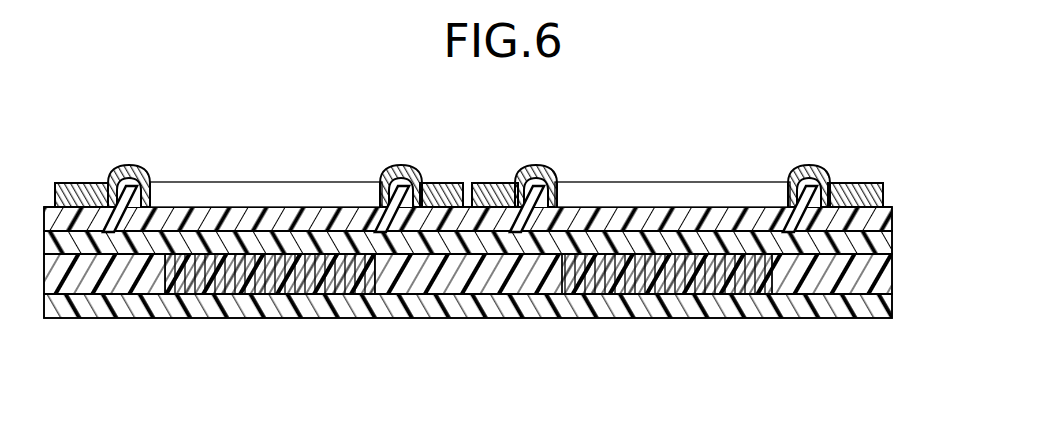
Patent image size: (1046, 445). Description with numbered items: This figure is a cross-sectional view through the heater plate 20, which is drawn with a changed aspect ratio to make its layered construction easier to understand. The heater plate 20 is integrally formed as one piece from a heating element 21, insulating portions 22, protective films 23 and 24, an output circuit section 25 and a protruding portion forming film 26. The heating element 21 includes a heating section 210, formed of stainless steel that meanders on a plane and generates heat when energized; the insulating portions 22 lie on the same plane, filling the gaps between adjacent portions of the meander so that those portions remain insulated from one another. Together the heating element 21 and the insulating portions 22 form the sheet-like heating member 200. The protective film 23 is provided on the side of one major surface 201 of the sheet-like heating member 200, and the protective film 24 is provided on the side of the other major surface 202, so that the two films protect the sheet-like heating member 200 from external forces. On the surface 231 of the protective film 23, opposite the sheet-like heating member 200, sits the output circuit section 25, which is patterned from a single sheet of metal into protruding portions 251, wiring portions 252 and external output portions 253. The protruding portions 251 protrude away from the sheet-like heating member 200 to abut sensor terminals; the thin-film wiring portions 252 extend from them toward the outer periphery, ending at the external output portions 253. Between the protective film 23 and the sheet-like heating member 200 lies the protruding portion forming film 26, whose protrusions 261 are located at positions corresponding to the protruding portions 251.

The heater plate 20 is at (257, 189).
The heating element 21 is at (500, 331).
The insulating portions 22 is at (500, 310).
The protective film 23 is at (498, 187).
The protective film 24 is at (500, 331).
The output circuit section 25 is at (478, 159).
The protruding portion forming film 26 is at (842, 243).
The sheet-like heating member 200 is at (500, 320).
The one major surface 201 is at (500, 310).
The other major surface 202 is at (842, 307).
The heating section 210 is at (597, 290).
The surface 231 is at (678, 208).
The protruding portions 251 is at (122, 168).
The wiring portions 252 is at (92, 198).
The external output portions 253 is at (57, 184).
The protrusions 261 is at (141, 226).